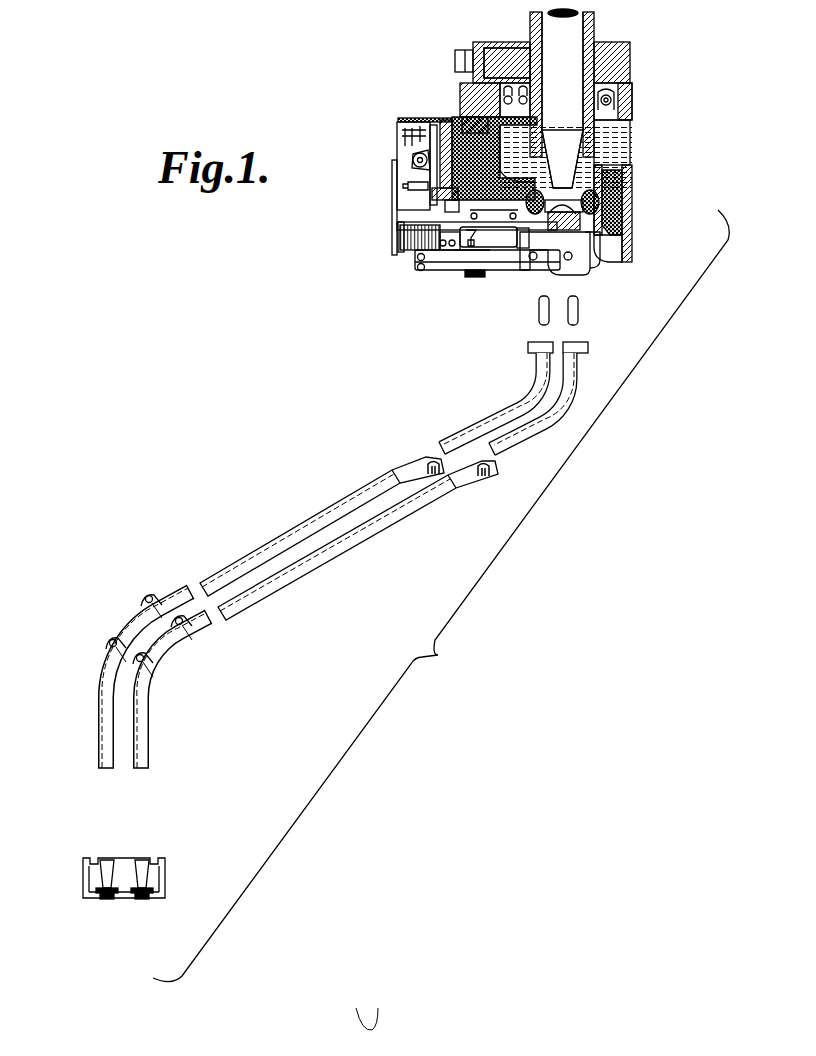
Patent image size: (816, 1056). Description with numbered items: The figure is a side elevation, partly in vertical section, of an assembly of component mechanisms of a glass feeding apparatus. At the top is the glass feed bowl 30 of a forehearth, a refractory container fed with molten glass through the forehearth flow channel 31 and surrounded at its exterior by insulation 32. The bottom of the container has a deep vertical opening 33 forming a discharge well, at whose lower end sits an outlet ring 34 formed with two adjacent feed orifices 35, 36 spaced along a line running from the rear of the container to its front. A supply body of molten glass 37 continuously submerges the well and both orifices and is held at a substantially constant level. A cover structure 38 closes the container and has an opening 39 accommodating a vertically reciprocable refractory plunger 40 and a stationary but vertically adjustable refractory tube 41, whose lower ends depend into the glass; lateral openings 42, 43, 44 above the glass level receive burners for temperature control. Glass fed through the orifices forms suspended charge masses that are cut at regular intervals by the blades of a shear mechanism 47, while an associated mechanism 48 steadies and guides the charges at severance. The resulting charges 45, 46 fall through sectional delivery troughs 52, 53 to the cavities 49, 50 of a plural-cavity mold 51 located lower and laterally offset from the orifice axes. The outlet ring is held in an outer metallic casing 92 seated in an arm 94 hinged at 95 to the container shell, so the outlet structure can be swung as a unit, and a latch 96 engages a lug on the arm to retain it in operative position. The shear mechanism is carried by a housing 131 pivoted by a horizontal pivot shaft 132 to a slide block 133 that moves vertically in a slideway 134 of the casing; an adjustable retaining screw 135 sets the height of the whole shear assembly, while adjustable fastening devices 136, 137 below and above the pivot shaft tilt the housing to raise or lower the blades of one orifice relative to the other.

The glass feed bowl 30 is at (432, 198).
The forehearth flow channel 31 is at (634, 176).
The insulation 32 is at (432, 170).
The vertical opening 33 is at (614, 196).
The outlet ring 34 is at (493, 248).
The feed orifice 35 is at (537, 262).
The feed orifice 36 is at (579, 250).
The supply body of molten glass 37 is at (518, 132).
The cover structure 38 is at (490, 42).
The opening 39 is at (612, 47).
The refractory plunger 40 is at (577, 21).
The refractory tube 41 is at (598, 28).
The lateral opening 42 is at (458, 58).
The lateral opening 43 is at (526, 95).
The lateral opening 44 is at (622, 90).
The charge 45 is at (540, 308).
The charge 46 is at (585, 312).
The shear mechanism 47 is at (400, 248).
The charge steadying and guiding mechanism 48 is at (413, 264).
The mold cavity 49 is at (105, 876).
The mold cavity 50 is at (150, 878).
The plural-cavity mold 51 is at (124, 897).
The delivery trough 52 is at (330, 512).
The delivery trough 53 is at (380, 514).
The outer metallic casing 92 is at (607, 206).
The arm 94 is at (488, 237).
The hinge 95 is at (472, 250).
The latch 96 is at (580, 242).
The housing 131 is at (400, 184).
The horizontal pivot shaft 132 is at (428, 150).
The slide block 133 is at (432, 178).
The slideway 134 is at (462, 122).
The adjustable retaining screw 135 is at (477, 217).
The adjustable fastening device 136 is at (430, 190).
The adjustable fastening device 137 is at (428, 138).